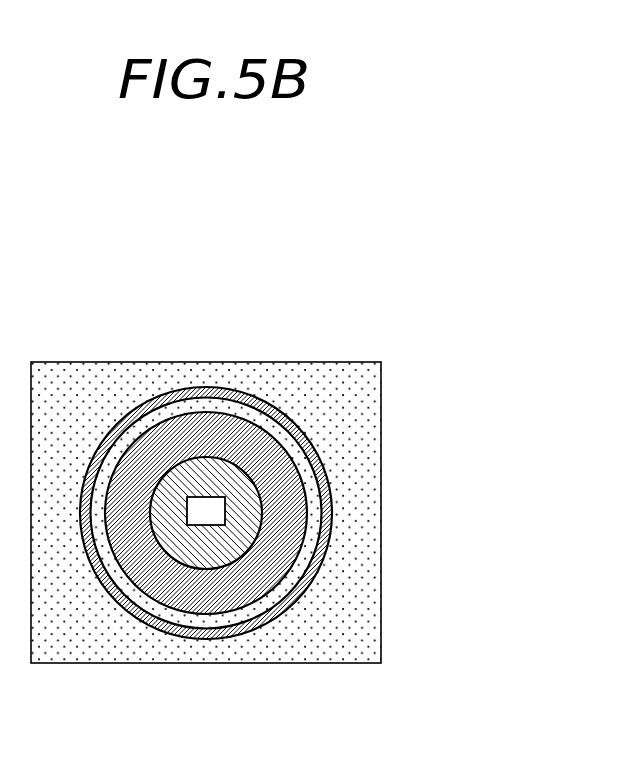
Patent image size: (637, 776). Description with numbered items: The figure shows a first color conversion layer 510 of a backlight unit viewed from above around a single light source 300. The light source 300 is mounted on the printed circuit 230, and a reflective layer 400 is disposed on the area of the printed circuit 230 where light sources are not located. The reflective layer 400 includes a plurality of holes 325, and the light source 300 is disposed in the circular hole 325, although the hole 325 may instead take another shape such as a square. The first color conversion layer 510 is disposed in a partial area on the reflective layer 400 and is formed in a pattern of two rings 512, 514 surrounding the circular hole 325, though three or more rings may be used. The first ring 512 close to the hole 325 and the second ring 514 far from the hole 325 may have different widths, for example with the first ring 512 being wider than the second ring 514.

The printed circuit 230 is at (200, 465).
The light source 300 is at (212, 505).
The hole 325 is at (143, 547).
The reflective layer 400 is at (328, 467).
The first color conversion layer 510 is at (290, 513).
The first ring 512 is at (288, 523).
The second ring 514 is at (300, 464).